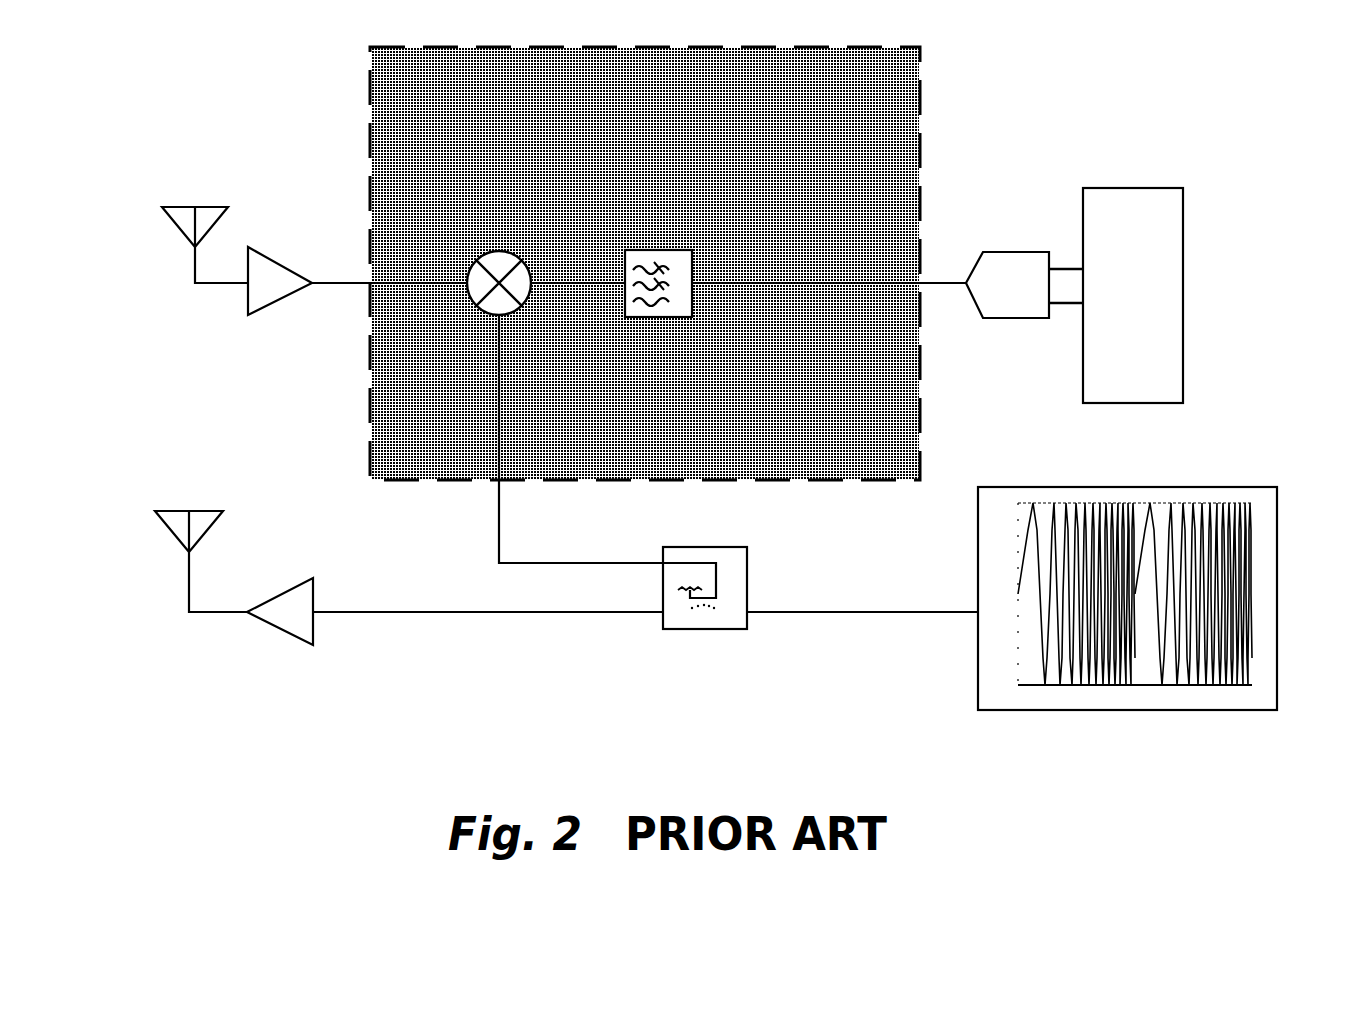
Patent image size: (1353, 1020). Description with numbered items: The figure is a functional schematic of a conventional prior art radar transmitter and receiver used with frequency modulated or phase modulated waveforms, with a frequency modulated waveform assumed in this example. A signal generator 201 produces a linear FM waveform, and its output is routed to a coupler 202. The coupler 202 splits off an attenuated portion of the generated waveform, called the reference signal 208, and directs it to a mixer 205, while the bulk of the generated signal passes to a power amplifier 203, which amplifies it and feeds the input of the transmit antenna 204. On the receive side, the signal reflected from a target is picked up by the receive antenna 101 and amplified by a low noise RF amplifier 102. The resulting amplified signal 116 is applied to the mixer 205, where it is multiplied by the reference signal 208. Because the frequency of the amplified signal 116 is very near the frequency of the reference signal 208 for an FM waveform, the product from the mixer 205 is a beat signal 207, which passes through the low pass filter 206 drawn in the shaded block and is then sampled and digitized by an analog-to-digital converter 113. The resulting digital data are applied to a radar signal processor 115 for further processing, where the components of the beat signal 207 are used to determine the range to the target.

The receive antenna 101 is at (165, 213).
The low noise RF amplifier 102 is at (248, 308).
The amplified signal 116 is at (320, 283).
The mixer 205 is at (476, 262).
The low pass filter LPF1 206 is at (665, 250).
The beat signal 207 is at (862, 283).
The analog-to-digital converter 113 is at (993, 320).
The radar signal processor 115 is at (1183, 265).
The reference signal 208 is at (499, 443).
The coupler 202 is at (660, 617).
The power amplifier 203 is at (245, 620).
The transmit antenna 204 is at (175, 537).
The signal generator 201 is at (978, 700).